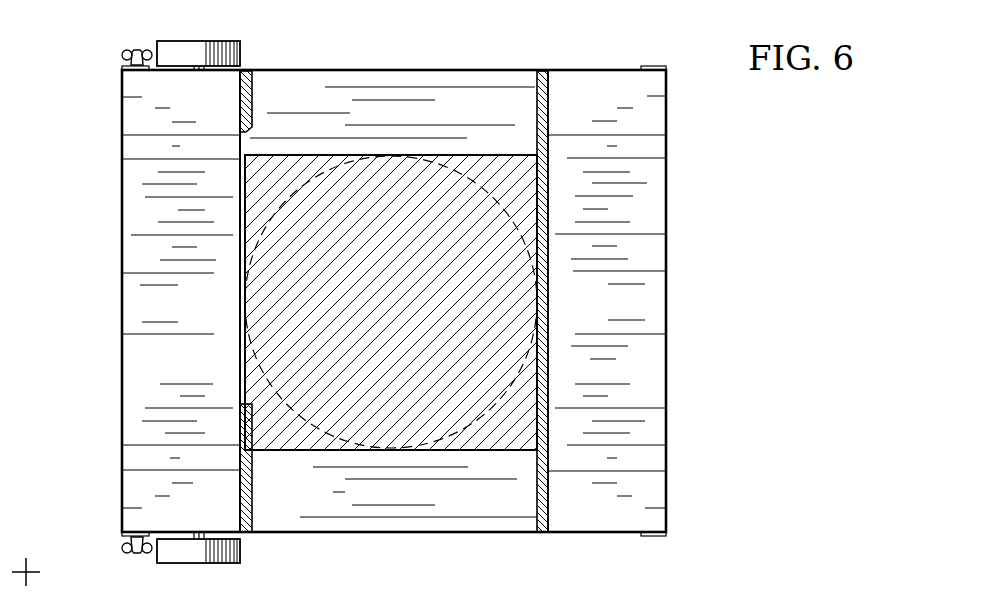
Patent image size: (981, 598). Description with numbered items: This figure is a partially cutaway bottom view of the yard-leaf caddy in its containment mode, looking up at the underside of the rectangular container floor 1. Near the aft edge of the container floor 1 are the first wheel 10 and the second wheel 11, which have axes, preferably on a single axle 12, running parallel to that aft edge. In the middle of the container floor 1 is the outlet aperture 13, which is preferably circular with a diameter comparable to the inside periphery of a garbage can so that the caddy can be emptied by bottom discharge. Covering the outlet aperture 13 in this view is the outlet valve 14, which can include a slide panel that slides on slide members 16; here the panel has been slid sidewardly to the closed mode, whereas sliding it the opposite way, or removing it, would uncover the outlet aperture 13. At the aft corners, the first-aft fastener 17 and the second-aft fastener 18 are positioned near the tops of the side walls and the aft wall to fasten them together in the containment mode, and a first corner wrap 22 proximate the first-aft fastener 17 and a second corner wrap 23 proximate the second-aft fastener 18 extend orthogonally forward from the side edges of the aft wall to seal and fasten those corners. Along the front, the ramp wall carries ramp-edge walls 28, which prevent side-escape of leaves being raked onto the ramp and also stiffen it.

The container floor 1 is at (190, 160).
The first wheel 10 is at (240, 556).
The second wheel 11 is at (240, 48).
The axle 12 is at (197, 71).
The outlet aperture 13 is at (497, 210).
The outlet valve 14 is at (445, 153).
The slide members 16 is at (548, 256).
The first-aft fastener 17 is at (125, 548).
The second-aft fastener 18 is at (125, 56).
The first corner wrap 22 is at (128, 528).
The second corner wrap 23 is at (133, 73).
The ramp-edge walls 28 is at (645, 68).